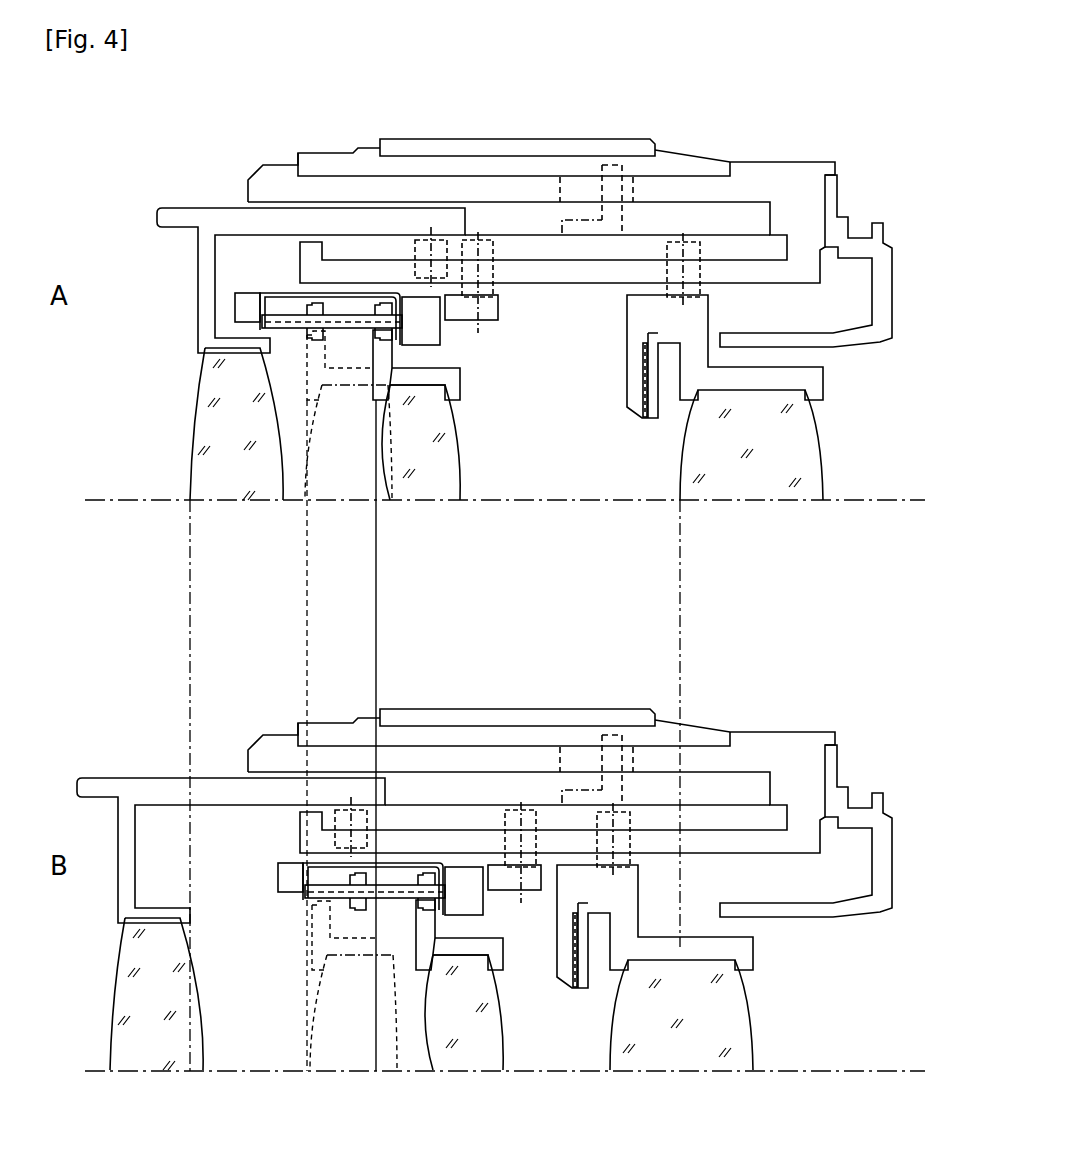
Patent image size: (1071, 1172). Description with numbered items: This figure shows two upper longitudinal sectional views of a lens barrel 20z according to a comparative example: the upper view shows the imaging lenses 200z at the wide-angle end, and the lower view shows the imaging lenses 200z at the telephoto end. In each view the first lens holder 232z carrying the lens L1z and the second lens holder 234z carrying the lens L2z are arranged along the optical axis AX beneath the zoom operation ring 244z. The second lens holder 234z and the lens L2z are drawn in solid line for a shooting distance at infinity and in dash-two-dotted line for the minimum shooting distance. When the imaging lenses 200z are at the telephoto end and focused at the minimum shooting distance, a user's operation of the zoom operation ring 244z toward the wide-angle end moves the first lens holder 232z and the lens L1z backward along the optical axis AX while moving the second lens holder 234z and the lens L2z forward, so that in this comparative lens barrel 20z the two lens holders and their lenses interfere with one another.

The lens barrel 20z is at (570, 563).
The zoom operation ring 244z is at (693, 153).
The first lens holder 232z is at (177, 214).
The second lens holder 234z is at (462, 383).
The imaging lenses 200z is at (345, 726).
The lens L1z is at (212, 383).
The lens L2z is at (447, 463).
The optical axis AX is at (875, 500).